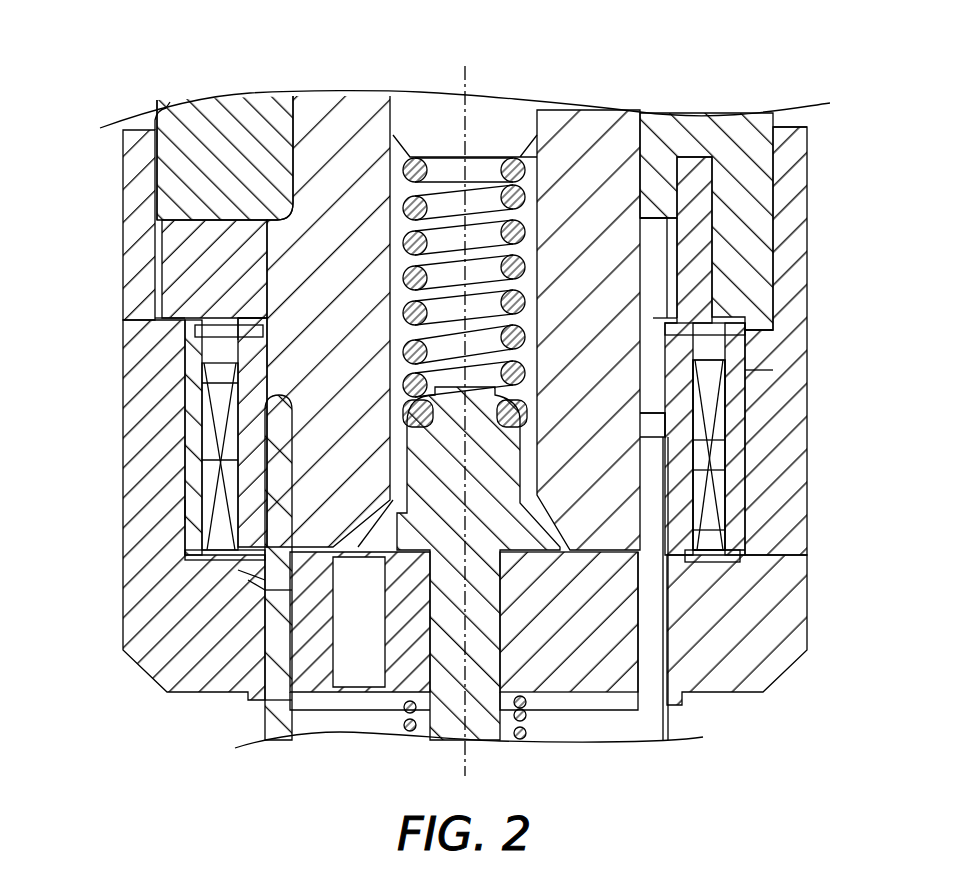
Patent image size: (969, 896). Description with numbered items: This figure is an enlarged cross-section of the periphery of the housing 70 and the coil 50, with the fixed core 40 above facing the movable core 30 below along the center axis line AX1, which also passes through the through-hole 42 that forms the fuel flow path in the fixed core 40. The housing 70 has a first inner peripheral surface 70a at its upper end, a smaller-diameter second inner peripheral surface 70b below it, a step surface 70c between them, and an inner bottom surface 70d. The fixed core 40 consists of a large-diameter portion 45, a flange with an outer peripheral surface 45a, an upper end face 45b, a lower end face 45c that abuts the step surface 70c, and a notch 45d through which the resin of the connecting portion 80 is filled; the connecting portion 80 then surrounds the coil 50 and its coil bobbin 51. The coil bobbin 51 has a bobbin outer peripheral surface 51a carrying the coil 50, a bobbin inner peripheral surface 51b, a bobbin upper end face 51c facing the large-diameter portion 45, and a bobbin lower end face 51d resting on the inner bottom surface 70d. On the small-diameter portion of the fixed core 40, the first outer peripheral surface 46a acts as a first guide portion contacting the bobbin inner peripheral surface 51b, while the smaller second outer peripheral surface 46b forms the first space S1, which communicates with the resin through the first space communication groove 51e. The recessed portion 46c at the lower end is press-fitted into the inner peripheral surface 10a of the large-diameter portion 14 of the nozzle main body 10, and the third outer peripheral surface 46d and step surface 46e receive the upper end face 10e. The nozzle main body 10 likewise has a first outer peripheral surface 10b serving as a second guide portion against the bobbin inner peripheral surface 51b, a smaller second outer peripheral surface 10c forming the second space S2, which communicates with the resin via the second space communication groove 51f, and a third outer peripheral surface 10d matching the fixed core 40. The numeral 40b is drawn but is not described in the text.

The nozzle main body 10 is at (675, 718).
The inner peripheral surface 10a is at (700, 480).
The first outer peripheral surface 10b is at (710, 530).
The second outer peripheral surface 10c is at (735, 600).
The third outer peripheral surface 10d is at (700, 440).
The upper end face 10e is at (212, 460).
The large-diameter portion 14 is at (252, 712).
The movable core 30 is at (570, 665).
The fixed core 40 is at (576, 207).
The valve body flange 40b is at (563, 400).
The through-hole 42 is at (412, 245).
The large-diameter portion 45 is at (220, 243).
The outer peripheral surface 45a is at (152, 240).
The upper end face 45b is at (167, 215).
The lower end face 45c is at (195, 342).
The notch 45d is at (680, 273).
The first outer peripheral surface 46a is at (712, 410).
The second outer peripheral surface 46b is at (745, 315).
The recessed portion 46c is at (712, 500).
The third outer peripheral surface 46d is at (660, 425).
The step surface 46e is at (192, 465).
The coil 50 is at (735, 385).
The coil bobbin 51 is at (748, 570).
The bobbin outer peripheral surface 51a is at (743, 370).
The bobbin inner peripheral surface 51b is at (775, 328).
The bobbin upper end face 51c is at (230, 305).
The bobbin lower end face 51d is at (255, 585).
The first space communication groove 51e is at (248, 315).
The second space communication groove 51f is at (243, 577).
The housing 70 is at (786, 652).
The first inner peripheral surface 70a is at (742, 215).
The second inner peripheral surface 70b is at (187, 508).
The step surface 70c is at (162, 318).
The inner bottom surface 70d is at (200, 562).
The connecting portion 80 is at (700, 128).
The center axis line AX1 is at (465, 409).
The first space S1 is at (215, 383).
The second space S2 is at (262, 590).